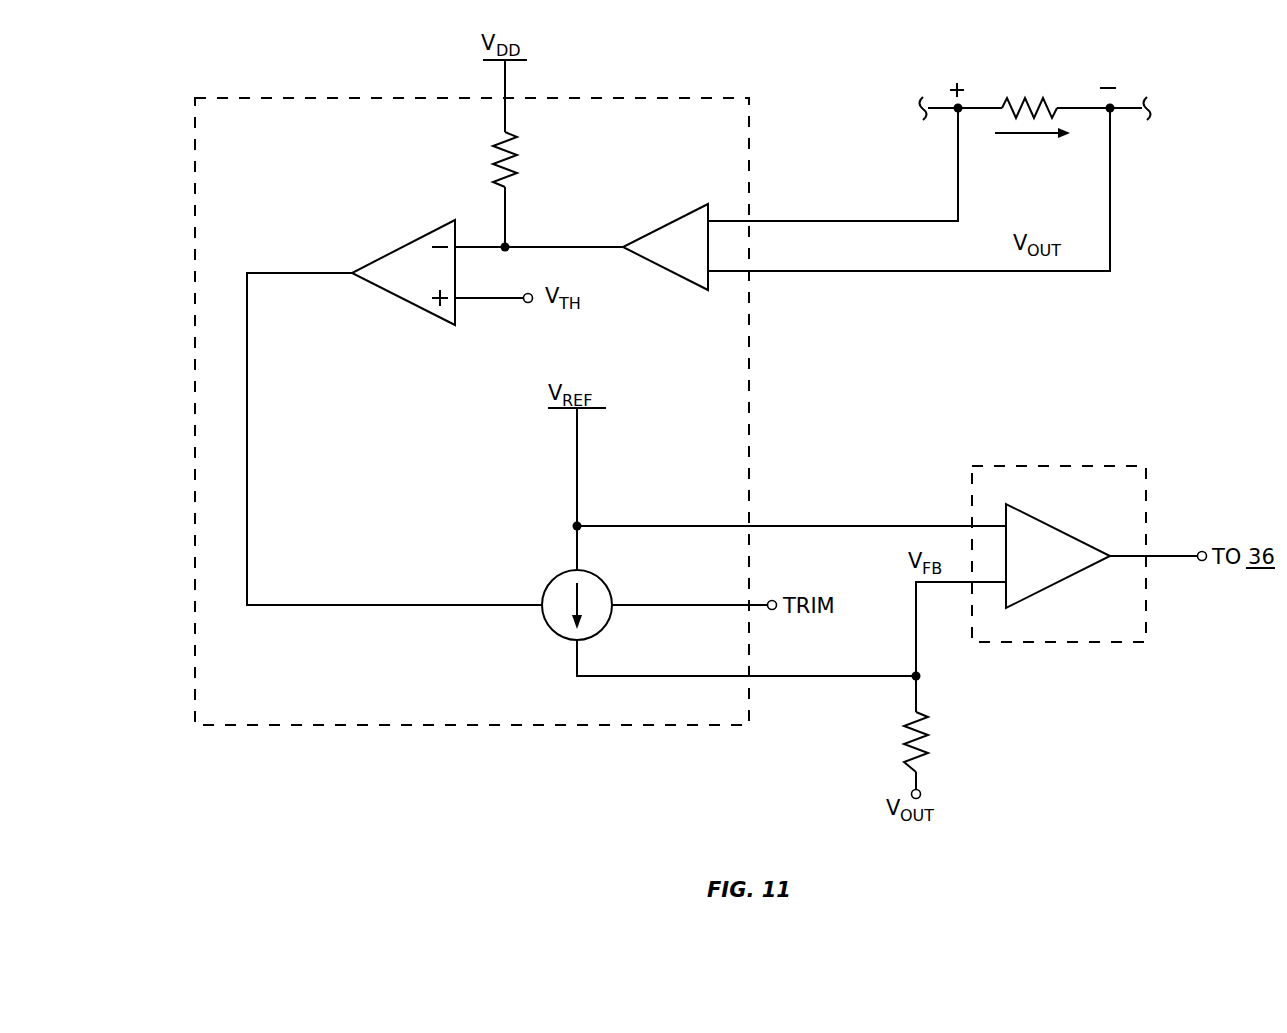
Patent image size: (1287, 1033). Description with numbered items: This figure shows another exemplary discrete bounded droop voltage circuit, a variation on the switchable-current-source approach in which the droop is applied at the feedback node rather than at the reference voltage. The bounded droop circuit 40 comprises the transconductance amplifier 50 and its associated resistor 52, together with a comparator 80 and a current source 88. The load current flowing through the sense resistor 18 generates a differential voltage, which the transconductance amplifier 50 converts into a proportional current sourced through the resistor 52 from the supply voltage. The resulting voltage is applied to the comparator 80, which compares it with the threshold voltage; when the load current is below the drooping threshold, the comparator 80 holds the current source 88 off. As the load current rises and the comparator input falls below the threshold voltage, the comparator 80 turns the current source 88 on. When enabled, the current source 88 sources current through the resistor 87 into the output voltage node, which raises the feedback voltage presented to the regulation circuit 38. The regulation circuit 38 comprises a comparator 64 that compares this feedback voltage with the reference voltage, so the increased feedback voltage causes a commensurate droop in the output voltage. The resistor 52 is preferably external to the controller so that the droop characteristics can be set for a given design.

The sense resistor 18 is at (1037, 94).
The regulation circuit 38 is at (1148, 505).
The bounded droop circuit 40 is at (750, 137).
The transconductance amplifier 50 is at (680, 216).
The resistor 52 is at (513, 171).
The comparator 64 is at (1039, 520).
The comparator 80 is at (425, 317).
The resistor 87 is at (930, 742).
The current source 88 is at (607, 587).